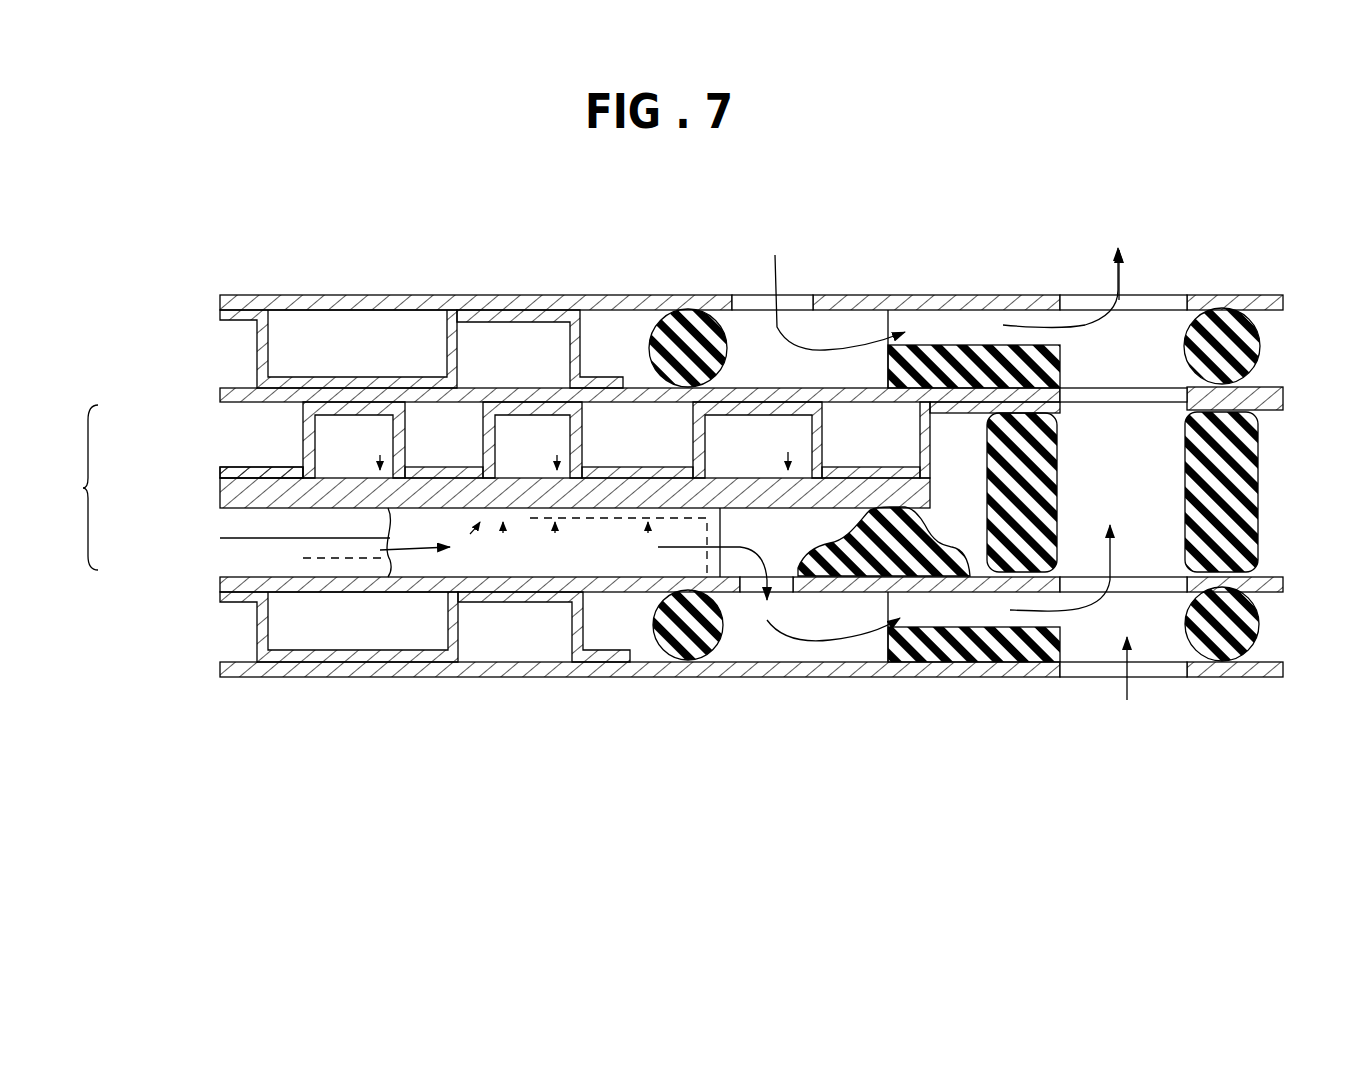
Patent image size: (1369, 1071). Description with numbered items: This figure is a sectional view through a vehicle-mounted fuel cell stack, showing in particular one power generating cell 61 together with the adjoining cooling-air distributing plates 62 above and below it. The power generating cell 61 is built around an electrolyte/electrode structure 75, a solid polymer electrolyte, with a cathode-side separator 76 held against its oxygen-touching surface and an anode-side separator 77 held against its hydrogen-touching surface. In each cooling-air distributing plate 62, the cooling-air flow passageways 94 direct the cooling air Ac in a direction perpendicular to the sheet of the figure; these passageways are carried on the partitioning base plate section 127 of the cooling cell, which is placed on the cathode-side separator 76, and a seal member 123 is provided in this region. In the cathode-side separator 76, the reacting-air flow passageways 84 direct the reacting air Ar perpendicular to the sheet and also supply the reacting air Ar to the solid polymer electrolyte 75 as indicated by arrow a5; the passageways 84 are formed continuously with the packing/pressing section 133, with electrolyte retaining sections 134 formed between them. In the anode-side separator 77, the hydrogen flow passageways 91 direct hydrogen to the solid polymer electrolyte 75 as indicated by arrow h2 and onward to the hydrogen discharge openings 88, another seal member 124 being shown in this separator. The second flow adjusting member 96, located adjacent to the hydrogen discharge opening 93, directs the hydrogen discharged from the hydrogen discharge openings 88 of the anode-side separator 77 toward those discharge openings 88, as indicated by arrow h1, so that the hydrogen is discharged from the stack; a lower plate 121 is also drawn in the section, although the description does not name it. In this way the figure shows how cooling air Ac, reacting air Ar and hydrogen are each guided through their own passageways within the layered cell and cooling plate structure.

The power generating cell 61 is at (72, 487).
The cooling-air distributing plate 62 is at (180, 357).
The electrolyte/electrode structure 75 is at (213, 492).
The cathode-side separator 76 is at (243, 462).
The anode-side separator 77 is at (413, 525).
The reacting-air flow passageway 84 is at (338, 420).
The hydrogen discharge opening 88 is at (793, 300).
The hydrogen flow passageway 91 is at (580, 558).
The hydrogen discharge opening 93 is at (1140, 392).
The cooling-air flow passageway 94 is at (295, 373).
The second flow adjusting member 96 is at (960, 345).
The lower plate 121 is at (237, 562).
The seal member 123 is at (1260, 357).
The seal member 124 is at (1260, 497).
The partitioning base plate section 127 is at (1285, 397).
The packing/pressing section 133 is at (862, 462).
The electrolyte retaining section 134 is at (437, 467).
The cooling air Ac is at (367, 497).
The reacting air Ar is at (555, 456).
The arrow a5 is at (545, 436).
The arrow h1 is at (960, 430).
The arrow h2 is at (559, 548).